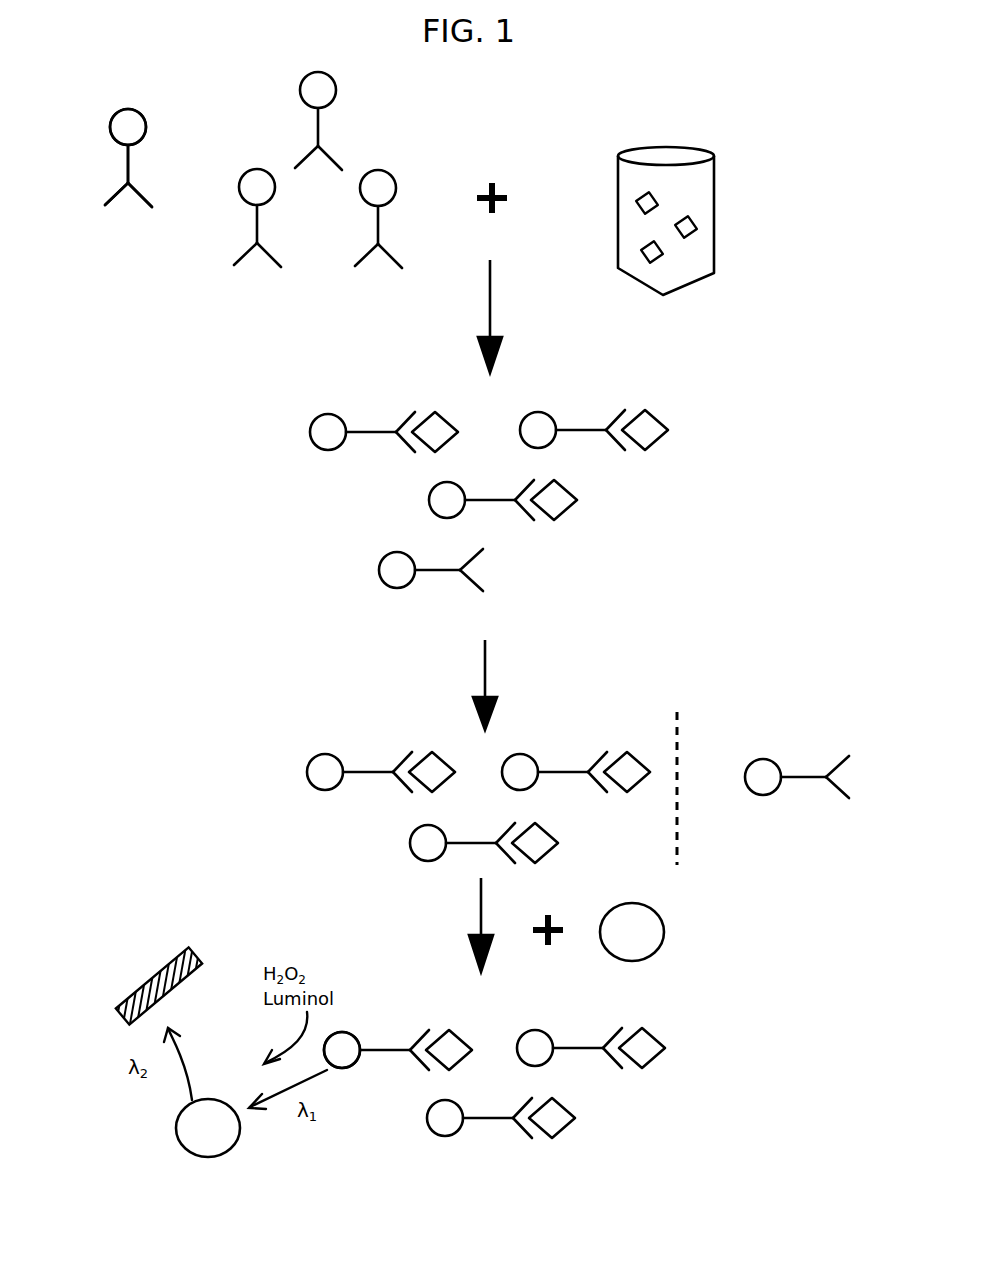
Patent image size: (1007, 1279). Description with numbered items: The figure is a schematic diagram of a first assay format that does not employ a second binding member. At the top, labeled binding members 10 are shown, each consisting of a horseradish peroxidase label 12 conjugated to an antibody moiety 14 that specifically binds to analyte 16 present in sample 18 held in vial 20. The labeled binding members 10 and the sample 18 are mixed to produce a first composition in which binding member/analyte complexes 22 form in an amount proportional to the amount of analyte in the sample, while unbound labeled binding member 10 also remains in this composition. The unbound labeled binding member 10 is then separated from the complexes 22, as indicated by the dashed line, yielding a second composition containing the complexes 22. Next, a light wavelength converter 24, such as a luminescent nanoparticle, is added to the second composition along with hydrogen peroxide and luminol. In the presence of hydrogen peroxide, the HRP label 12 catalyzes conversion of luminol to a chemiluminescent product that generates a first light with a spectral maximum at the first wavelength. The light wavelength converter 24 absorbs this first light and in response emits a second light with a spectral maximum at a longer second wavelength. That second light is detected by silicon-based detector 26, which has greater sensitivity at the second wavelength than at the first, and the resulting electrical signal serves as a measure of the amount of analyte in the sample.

The labeled binding member 10 is at (84, 110).
The horseradish peroxidase label 12 is at (131, 111).
The antibody moiety 14 is at (140, 213).
The analyte 16 is at (696, 225).
The sample 18 is at (688, 263).
The vial 20 is at (714, 187).
The binding member/analyte complex 22 is at (403, 412).
The light wavelength converter 24 is at (664, 922).
The silicon-based detector 26 is at (158, 962).